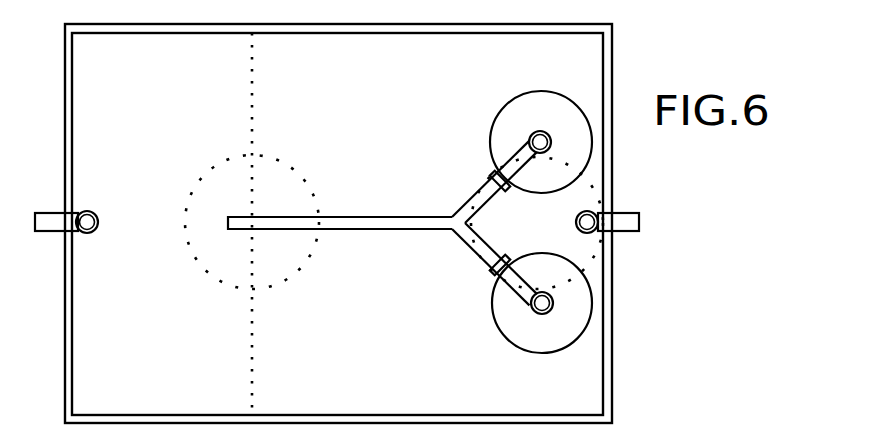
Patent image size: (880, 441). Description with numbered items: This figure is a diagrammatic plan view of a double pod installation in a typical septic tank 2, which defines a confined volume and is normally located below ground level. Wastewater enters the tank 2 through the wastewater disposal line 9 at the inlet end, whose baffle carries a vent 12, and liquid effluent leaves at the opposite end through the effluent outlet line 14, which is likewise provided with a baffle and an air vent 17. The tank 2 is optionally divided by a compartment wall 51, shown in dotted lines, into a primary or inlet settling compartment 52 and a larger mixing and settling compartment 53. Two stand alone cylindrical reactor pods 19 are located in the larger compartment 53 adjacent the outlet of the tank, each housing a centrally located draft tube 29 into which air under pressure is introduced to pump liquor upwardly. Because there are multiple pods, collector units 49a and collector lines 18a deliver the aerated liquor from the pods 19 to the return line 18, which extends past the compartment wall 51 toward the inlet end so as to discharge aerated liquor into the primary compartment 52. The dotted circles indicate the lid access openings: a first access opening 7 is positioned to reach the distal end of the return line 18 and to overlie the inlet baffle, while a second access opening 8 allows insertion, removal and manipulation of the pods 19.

The septic tank 2 is at (647, 58).
The first access opening 7 is at (297, 172).
The second access opening 8 is at (590, 185).
The wastewater disposal line 9 is at (47, 232).
The vent 12 is at (96, 211).
The effluent outlet line 14 is at (633, 233).
The air vent 17 is at (593, 212).
The return line 18 is at (390, 216).
The collector lines 18a is at (480, 187).
The cylindrical reactor pod 19 is at (498, 115).
The draft tube 29 is at (538, 131).
The collector units 49a is at (525, 176).
The compartment wall 51 is at (253, 88).
The primary or inlet settling compartment 52 is at (157, 337).
The mixing and settling compartment 53 is at (378, 329).